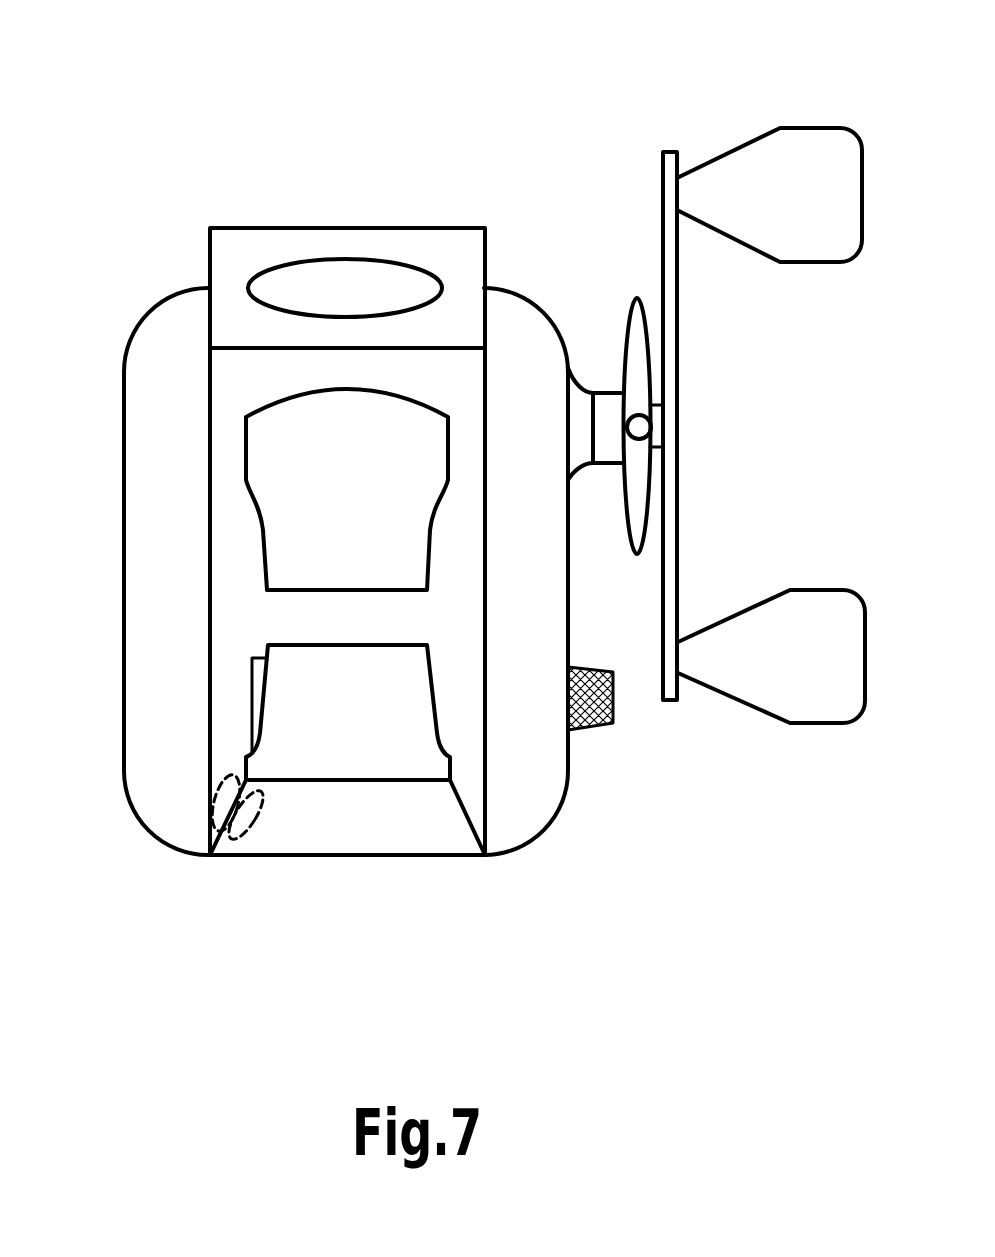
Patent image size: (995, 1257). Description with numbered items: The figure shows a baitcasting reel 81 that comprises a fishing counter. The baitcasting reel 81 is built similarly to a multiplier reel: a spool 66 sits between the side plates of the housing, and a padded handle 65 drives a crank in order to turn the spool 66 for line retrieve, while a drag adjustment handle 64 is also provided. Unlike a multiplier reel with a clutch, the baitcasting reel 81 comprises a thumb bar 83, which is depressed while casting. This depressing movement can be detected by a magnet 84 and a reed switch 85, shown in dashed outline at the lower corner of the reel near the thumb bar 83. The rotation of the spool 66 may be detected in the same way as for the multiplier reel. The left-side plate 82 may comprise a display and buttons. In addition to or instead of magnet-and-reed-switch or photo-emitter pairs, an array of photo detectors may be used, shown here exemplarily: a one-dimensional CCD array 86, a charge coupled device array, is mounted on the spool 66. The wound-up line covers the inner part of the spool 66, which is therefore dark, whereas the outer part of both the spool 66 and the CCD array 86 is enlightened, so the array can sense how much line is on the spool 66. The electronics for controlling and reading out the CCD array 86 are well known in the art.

The baitcasting reel 81 is at (113, 100).
The left-side plate 82 is at (147, 547).
The spool 66 is at (273, 620).
The thumb bar 83 is at (257, 848).
The magnet 84 is at (262, 802).
The reed switch 85 is at (220, 791).
The CCD array 86 is at (265, 700).
The drag adjustment handle 64 is at (638, 310).
The padded handle 65 is at (818, 137).